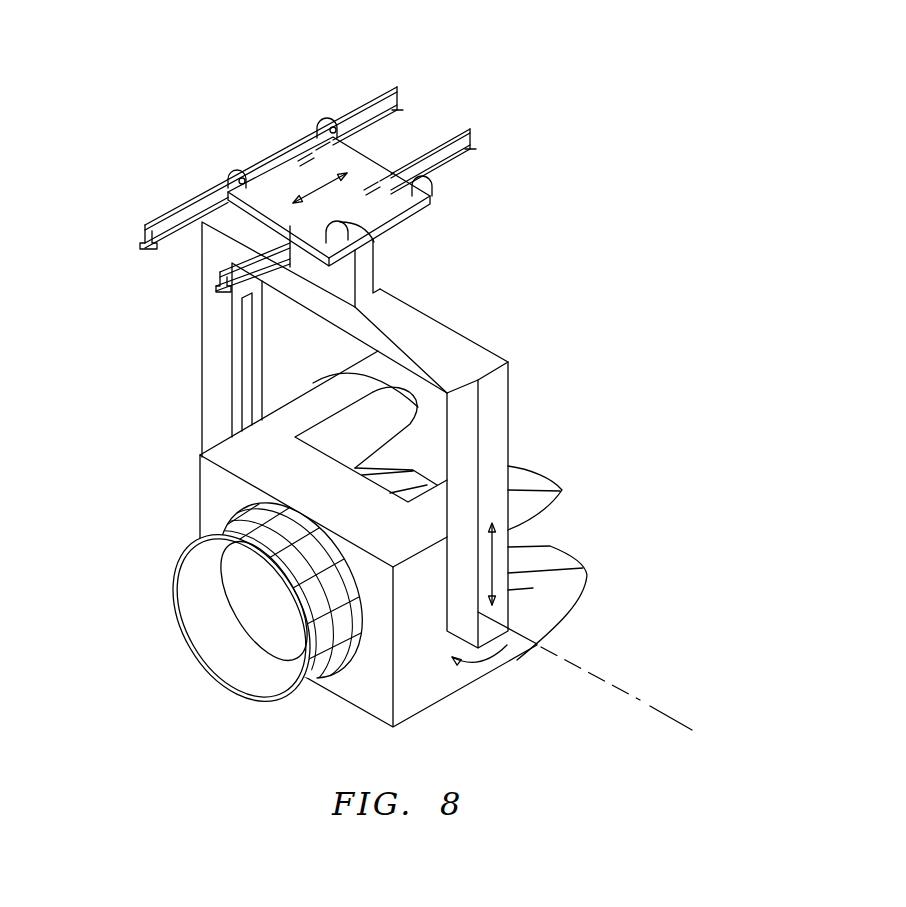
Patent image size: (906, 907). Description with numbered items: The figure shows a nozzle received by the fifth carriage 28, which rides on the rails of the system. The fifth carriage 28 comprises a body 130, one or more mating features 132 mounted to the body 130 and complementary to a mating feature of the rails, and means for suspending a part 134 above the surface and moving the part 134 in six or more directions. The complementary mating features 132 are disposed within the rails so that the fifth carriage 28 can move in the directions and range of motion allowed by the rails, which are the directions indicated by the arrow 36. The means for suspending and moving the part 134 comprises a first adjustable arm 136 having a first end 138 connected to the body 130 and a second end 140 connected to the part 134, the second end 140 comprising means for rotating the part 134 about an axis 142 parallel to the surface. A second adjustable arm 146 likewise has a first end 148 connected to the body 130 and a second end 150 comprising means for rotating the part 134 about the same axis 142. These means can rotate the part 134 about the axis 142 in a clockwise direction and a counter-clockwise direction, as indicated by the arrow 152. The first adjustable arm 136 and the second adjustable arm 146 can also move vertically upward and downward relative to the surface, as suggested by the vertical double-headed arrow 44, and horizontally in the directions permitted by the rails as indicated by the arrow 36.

The fifth carriage 28 is at (449, 272).
The arrow 36 is at (318, 190).
The fin 44 is at (508, 548).
The body 130 is at (202, 222).
The mating features 132 is at (333, 120).
The part 134 is at (413, 707).
The first adjustable arm 136 is at (223, 410).
The first end 138 is at (204, 328).
The second end 140 is at (198, 451).
The axis 142 is at (650, 712).
The second adjustable arm 146 is at (500, 452).
The first end 148 is at (508, 381).
The second end 150 is at (533, 588).
The arrow 152 is at (531, 598).